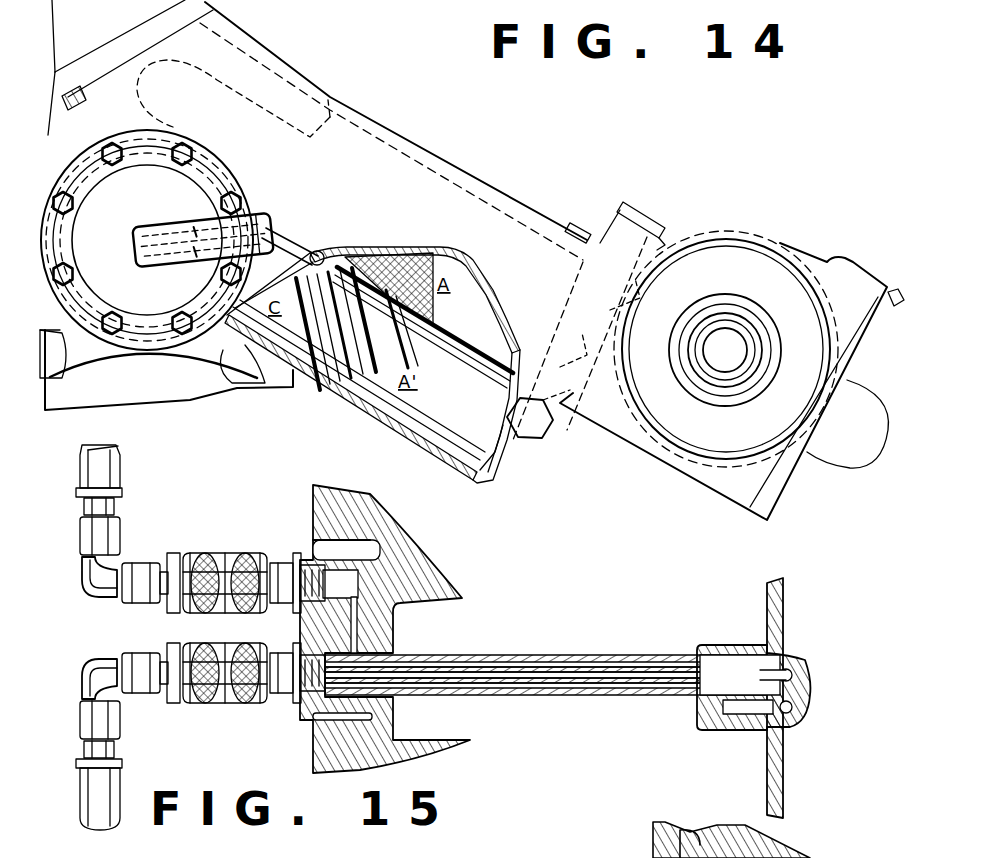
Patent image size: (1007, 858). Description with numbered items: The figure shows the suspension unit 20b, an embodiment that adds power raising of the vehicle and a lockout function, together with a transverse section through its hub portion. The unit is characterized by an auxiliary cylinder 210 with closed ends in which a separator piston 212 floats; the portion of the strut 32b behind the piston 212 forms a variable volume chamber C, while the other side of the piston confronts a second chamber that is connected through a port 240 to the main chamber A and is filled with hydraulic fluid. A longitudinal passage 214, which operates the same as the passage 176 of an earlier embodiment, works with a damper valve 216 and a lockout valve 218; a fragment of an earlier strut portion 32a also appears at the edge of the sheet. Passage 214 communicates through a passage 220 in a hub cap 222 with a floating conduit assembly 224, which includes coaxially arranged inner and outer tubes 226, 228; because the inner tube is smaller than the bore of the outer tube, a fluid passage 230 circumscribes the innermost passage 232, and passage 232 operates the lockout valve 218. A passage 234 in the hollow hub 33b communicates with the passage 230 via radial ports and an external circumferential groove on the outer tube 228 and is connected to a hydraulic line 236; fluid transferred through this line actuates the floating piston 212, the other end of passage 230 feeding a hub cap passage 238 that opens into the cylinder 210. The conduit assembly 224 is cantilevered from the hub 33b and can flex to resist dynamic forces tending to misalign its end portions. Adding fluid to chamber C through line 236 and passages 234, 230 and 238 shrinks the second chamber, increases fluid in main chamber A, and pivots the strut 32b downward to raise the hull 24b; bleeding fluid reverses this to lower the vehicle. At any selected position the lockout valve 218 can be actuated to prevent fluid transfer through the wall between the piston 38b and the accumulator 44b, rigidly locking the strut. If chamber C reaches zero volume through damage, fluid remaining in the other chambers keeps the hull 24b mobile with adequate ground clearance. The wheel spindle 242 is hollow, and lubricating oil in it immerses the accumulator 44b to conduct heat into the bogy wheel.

In FIG. 14, the suspension unit 20b is at (458, 118).
In FIG. 14, the hull 24b is at (333, 97).
In FIG. 15, the hull 24b is at (320, 507).
In FIG. 14, the strut 32b is at (468, 184).
In FIG. 15, the hollow hub 33b is at (430, 577).
In FIG. 14, the piston 38b is at (395, 255).
In FIG. 14, the accumulator 44b is at (750, 248).
In FIG. 15, the passage 176 is at (696, 832).
In FIG. 15, the arm portion 32a is at (655, 841).
In FIG. 14, the auxiliary cylinder 210 is at (388, 428).
In FIG. 14, the separator piston 212 is at (315, 394).
In FIG. 14, the longitudinal passage 214 is at (300, 246).
In FIG. 14, the damper valve 216 is at (598, 242).
In FIG. 14, the lockout valve 218 is at (590, 373).
In FIG. 14, the hub cap passage 220 is at (186, 220).
In FIG. 15, the hub cap passage 220 is at (792, 665).
In FIG. 14, the hub cap 222 is at (136, 170).
In FIG. 15, the hub cap 222 is at (784, 596).
In FIG. 15, the floating conduit assembly 224 is at (545, 660).
In FIG. 15, the inner tube 226 is at (549, 683).
In FIG. 15, the outer tube 228 is at (640, 698).
In FIG. 15, the fluid passage 230 is at (465, 688).
In FIG. 15, the innermost passage 232 is at (425, 677).
In FIG. 15, the passage 234 is at (355, 625).
In FIG. 15, the hydraulic line 236 is at (122, 473).
In FIG. 14, the hub cap passage 238 is at (178, 278).
In FIG. 15, the hub cap passage 238 is at (795, 704).
In FIG. 14, the port 240 is at (522, 350).
In FIG. 14, the wheel spindle 242 is at (757, 390).